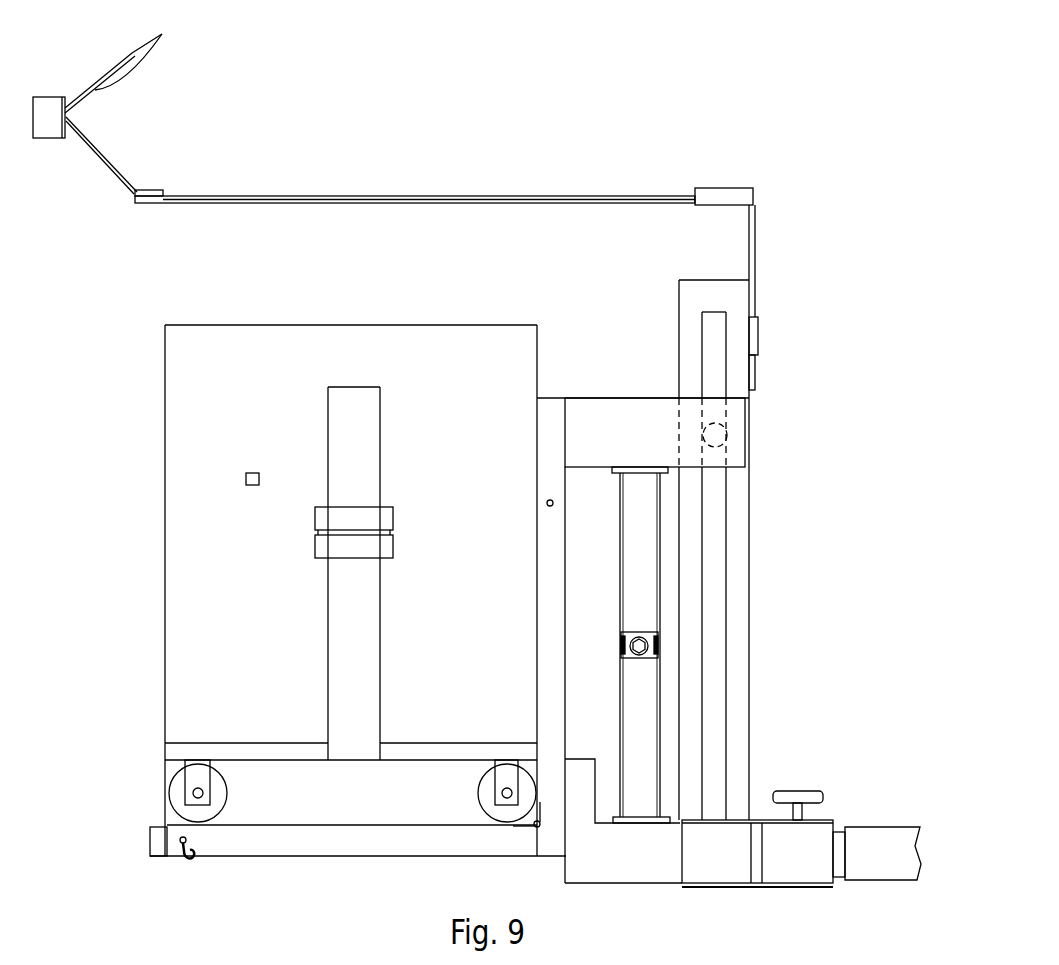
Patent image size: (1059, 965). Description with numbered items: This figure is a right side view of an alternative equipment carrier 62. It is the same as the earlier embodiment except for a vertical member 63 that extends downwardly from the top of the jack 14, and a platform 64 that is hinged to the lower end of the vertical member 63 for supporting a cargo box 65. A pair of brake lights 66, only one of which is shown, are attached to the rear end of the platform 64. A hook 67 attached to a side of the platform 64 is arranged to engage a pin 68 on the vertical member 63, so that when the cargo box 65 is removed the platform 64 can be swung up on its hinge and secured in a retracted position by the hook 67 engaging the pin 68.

The jack 14 is at (620, 707).
The equipment carrier 62 is at (752, 593).
The vertical member 63 is at (557, 601).
The platform 64 is at (355, 857).
The cargo box 65 is at (165, 604).
The brake lights 66 is at (150, 842).
The hook 67 is at (184, 862).
The pin 68 is at (553, 502).